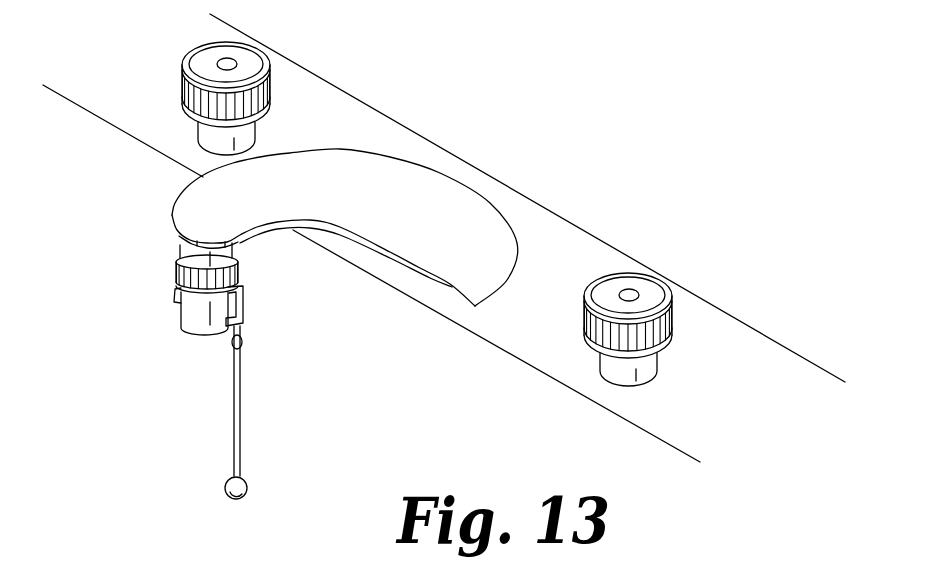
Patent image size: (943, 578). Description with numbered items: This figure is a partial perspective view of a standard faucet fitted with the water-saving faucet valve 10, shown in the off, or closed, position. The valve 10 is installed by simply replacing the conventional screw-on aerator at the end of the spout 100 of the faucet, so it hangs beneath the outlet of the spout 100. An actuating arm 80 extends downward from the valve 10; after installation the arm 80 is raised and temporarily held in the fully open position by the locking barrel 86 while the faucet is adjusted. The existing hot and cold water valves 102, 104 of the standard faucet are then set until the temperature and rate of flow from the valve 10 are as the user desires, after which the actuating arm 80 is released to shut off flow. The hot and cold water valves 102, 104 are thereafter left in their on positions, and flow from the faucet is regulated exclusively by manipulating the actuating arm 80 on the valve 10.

The water-saving faucet valve 10 is at (192, 305).
The actuating arm 80 is at (238, 405).
The locking barrel 86 is at (242, 345).
The spout 100 is at (435, 188).
The hot water valve 102 is at (255, 60).
The cold water valve 104 is at (647, 288).